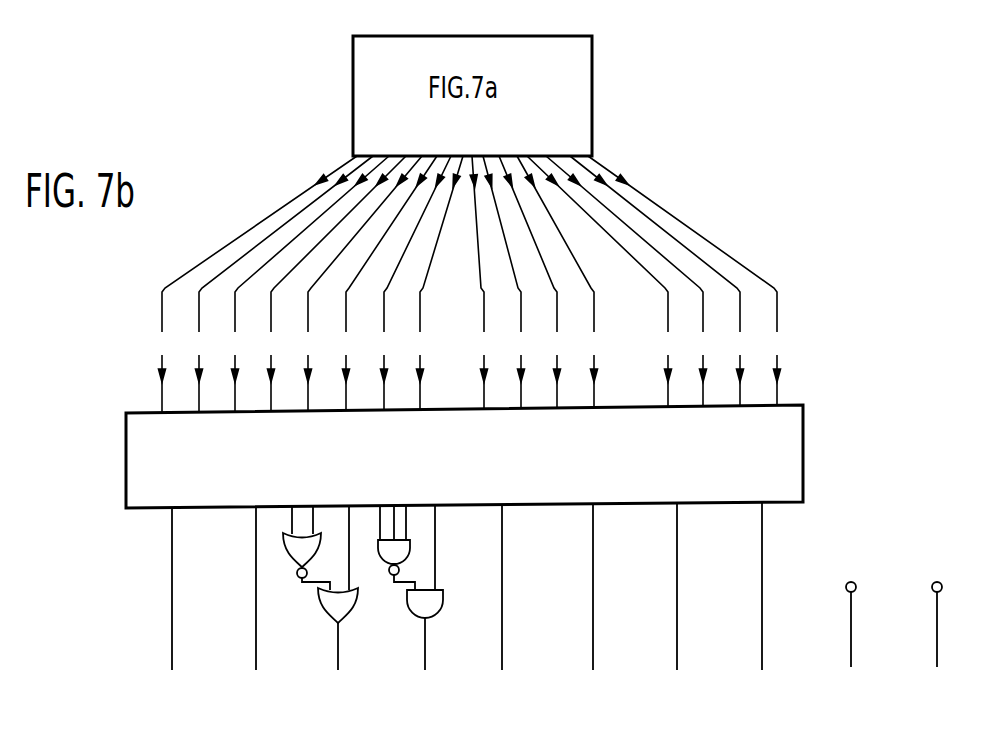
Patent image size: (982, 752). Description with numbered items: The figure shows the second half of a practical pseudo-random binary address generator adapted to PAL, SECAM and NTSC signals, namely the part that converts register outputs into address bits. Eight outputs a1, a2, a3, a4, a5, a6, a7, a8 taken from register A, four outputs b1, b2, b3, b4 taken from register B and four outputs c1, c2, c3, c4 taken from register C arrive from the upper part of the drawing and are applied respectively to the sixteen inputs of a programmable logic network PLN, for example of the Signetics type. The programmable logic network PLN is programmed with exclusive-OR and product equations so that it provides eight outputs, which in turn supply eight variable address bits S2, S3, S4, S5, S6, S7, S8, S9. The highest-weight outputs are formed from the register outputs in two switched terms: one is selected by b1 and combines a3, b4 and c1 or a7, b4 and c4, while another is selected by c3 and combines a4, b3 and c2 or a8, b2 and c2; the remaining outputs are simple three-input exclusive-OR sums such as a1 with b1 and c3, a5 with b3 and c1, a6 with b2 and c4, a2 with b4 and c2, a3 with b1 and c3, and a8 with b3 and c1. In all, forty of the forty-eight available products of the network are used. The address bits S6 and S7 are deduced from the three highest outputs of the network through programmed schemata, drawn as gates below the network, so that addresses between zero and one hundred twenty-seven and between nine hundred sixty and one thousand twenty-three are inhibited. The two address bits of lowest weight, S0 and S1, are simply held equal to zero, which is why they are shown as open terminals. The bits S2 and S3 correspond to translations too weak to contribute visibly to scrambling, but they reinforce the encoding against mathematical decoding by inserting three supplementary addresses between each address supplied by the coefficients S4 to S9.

The programmable logic network PLN is at (464, 456).
The output a1 of register A a1 is at (254, 284).
The output a2 of register A a2 is at (281, 284).
The output a3 of register A a3 is at (307, 284).
The output a4 of register A a4 is at (333, 283).
The output a5 of register A a5 is at (360, 283).
The output a6 of register A a6 is at (386, 283).
The output a7 of register A a7 is at (412, 283).
The output a8 of register A a8 is at (436, 283).
The output b1 of register B b1 is at (482, 282).
The output b2 of register B b2 is at (507, 282).
The output b3 of register B b3 is at (533, 282).
The output b4 of register B b4 is at (561, 282).
The output c1 of register C c1 is at (602, 281).
The output c2 of register C c2 is at (629, 281).
The output c3 of register C c3 is at (659, 281).
The output c4 of register C c4 is at (687, 280).
The address bit S9 is at (187, 591).
The address bit S8 is at (271, 591).
The address bit S7 is at (328, 590).
The address bit S6 is at (417, 590).
The address bit S5 is at (517, 590).
The address bit S4 is at (608, 589).
The address bit S3 is at (692, 589).
The address bit S2 is at (777, 588).
The address bit S1 is at (864, 628).
The address bit S0 is at (950, 628).